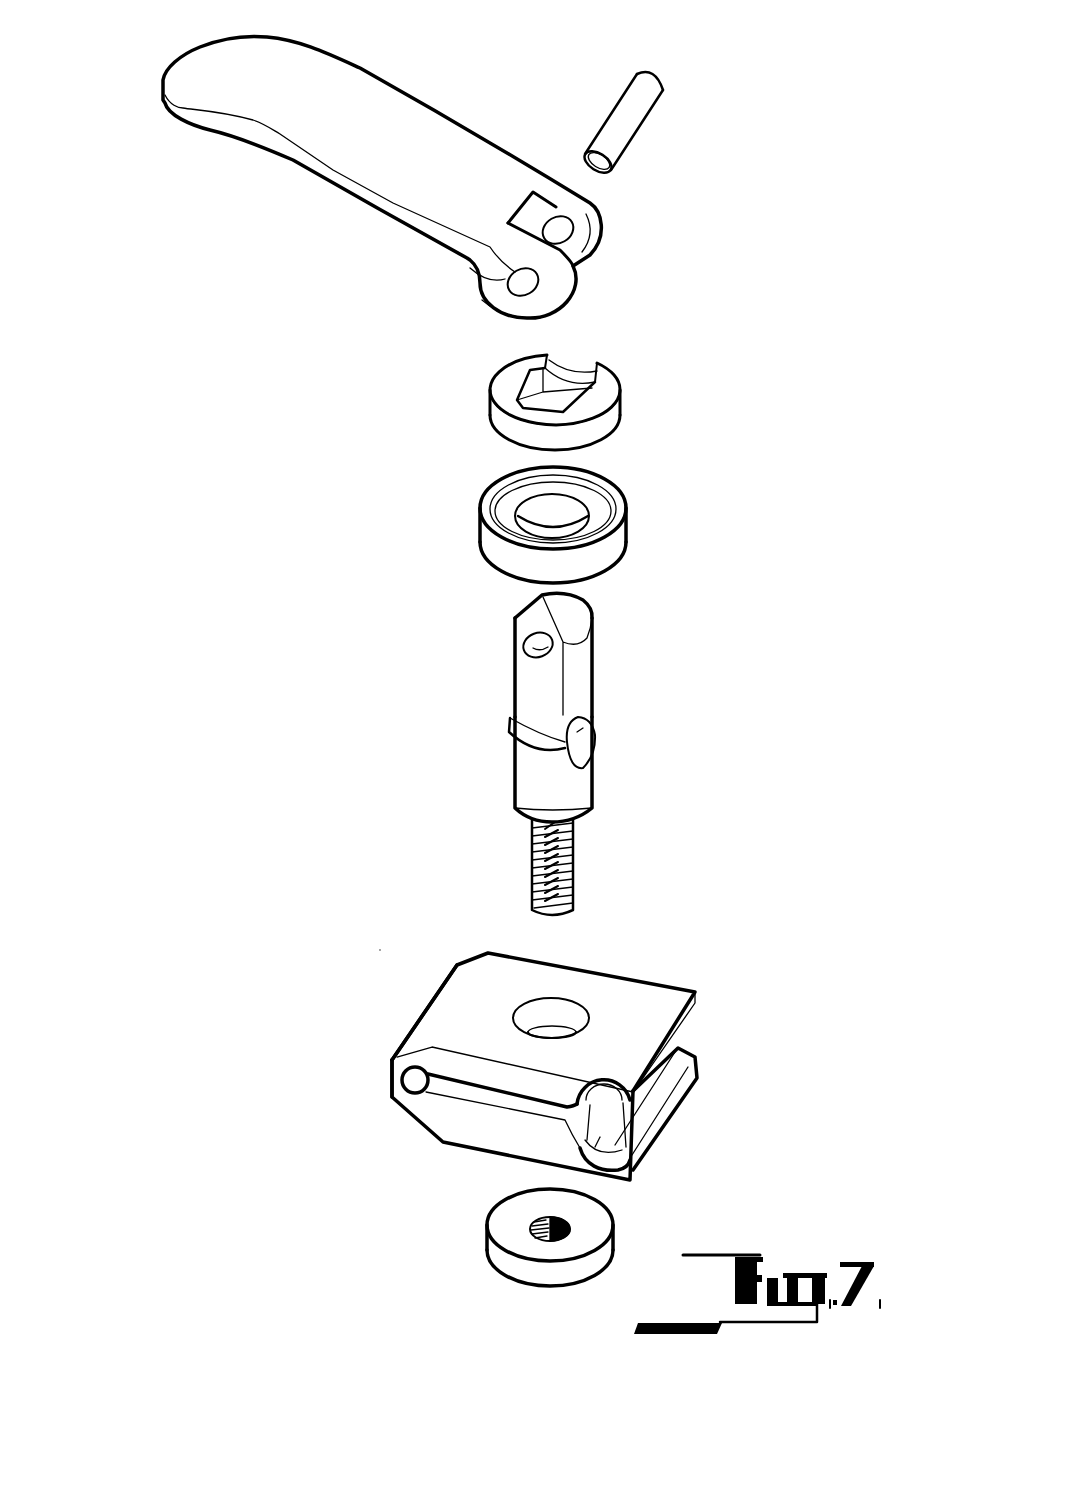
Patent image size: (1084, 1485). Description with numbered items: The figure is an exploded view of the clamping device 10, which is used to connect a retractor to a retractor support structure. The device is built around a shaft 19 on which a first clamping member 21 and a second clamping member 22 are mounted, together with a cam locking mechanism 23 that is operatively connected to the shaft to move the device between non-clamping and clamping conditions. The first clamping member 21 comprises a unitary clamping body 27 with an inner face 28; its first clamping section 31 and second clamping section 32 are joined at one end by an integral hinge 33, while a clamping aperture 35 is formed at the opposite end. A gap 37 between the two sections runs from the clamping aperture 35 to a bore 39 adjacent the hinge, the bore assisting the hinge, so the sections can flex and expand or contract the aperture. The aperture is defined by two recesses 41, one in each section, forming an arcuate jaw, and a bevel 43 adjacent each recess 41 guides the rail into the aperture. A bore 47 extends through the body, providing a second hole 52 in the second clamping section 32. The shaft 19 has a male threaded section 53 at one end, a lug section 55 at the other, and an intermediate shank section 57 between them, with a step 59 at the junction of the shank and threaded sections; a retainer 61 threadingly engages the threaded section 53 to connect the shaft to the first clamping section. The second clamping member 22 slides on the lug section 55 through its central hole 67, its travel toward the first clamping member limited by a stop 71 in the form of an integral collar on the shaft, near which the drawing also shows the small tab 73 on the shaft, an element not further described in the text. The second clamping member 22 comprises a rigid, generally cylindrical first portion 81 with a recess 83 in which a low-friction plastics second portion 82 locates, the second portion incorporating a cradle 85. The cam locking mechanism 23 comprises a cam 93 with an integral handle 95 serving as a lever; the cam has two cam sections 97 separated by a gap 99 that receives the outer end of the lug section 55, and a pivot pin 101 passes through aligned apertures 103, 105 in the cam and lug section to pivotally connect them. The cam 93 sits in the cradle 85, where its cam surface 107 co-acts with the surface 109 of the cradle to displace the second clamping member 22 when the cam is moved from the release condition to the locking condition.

The clamping device 10 is at (455, 668).
The shaft 19 is at (546, 754).
The first clamping member 21 is at (537, 1060).
The second clamping member 22 is at (546, 458).
The cam locking mechanism 23 is at (430, 177).
The clamping body 27 is at (447, 990).
The inner face 28 is at (500, 962).
The first clamping section 31 is at (445, 1132).
The second clamping section 32 is at (670, 1010).
The integral hinge 33 is at (400, 1083).
The clamping aperture 35 is at (600, 1148).
The gap 37 is at (493, 1102).
The bore 39 is at (418, 1088).
The recess 41 is at (625, 1082).
The bevel 43 is at (640, 1117).
The bore 47 is at (560, 1004).
The second hole 52 is at (522, 1018).
The male threaded section 53 is at (530, 858).
The lug section 55 is at (541, 655).
The intermediate shank section 57 is at (523, 792).
The step 59 is at (588, 818).
The retainer 61 is at (528, 1272).
The central hole 67 is at (583, 508).
The stop 71 is at (512, 737).
The tab 73 is at (590, 735).
The first portion 81 is at (553, 525).
The second portion 82 is at (512, 394).
The recess 83 is at (598, 523).
The cradle 85 is at (553, 354).
The cam 93 is at (472, 285).
The handle 95 is at (400, 105).
The cam section 97 is at (590, 212).
The gap 99 is at (587, 252).
The pivot pin 101 is at (642, 125).
The aperture 103 is at (548, 222).
The aperture 105 is at (538, 650).
The cam surface 107 is at (482, 306).
The surface 109 is at (533, 422).